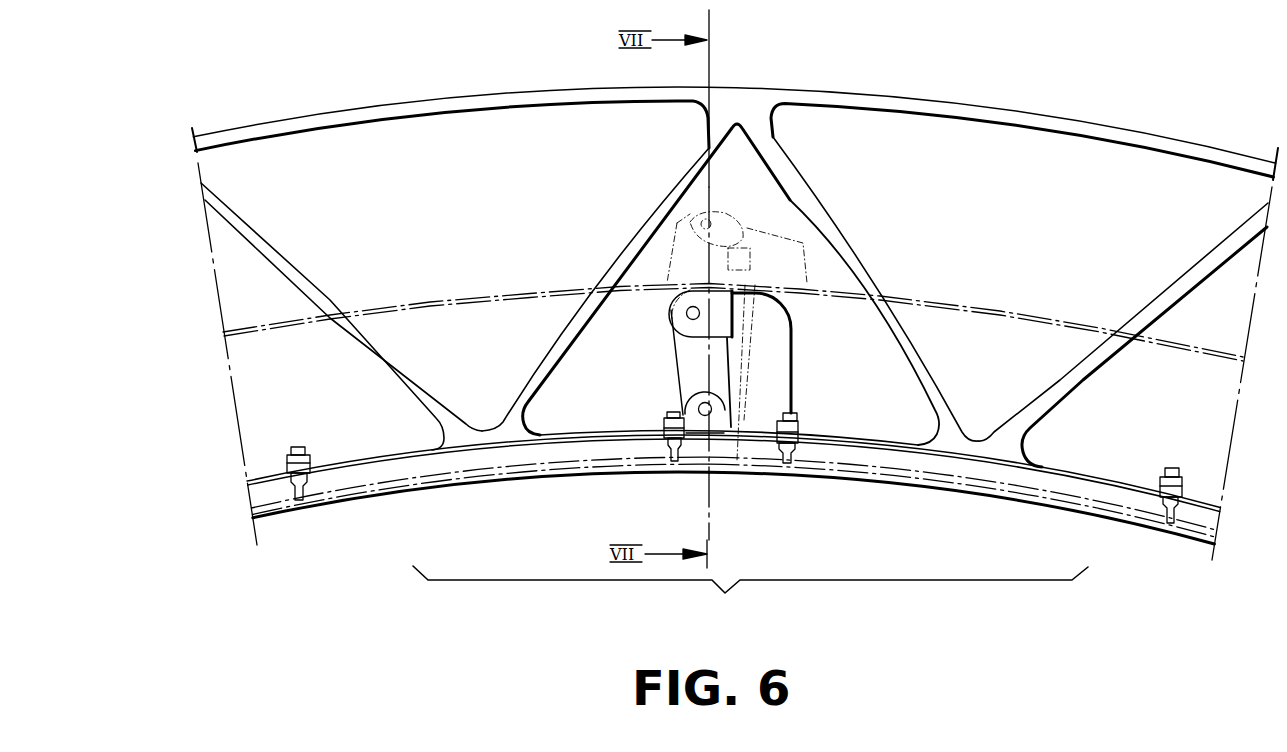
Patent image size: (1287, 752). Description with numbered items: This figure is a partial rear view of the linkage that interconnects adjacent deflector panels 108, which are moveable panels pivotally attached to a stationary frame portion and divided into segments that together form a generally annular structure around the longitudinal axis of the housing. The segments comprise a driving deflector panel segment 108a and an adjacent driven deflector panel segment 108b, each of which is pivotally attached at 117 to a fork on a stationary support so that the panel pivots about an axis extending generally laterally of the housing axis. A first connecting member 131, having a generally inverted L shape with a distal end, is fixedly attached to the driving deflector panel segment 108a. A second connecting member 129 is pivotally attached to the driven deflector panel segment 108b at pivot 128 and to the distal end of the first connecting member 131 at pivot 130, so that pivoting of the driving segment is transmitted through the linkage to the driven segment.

The deflector panel 108 is at (735, 354).
The driving deflector panel segment 108a is at (1043, 477).
The driven deflector panel segment 108b is at (449, 455).
The pivotal attachment 117 is at (272, 475).
The pivot 128 is at (700, 416).
The second connecting member 129 is at (677, 358).
The pivot 130 is at (686, 317).
The first connecting member 131 is at (753, 420).